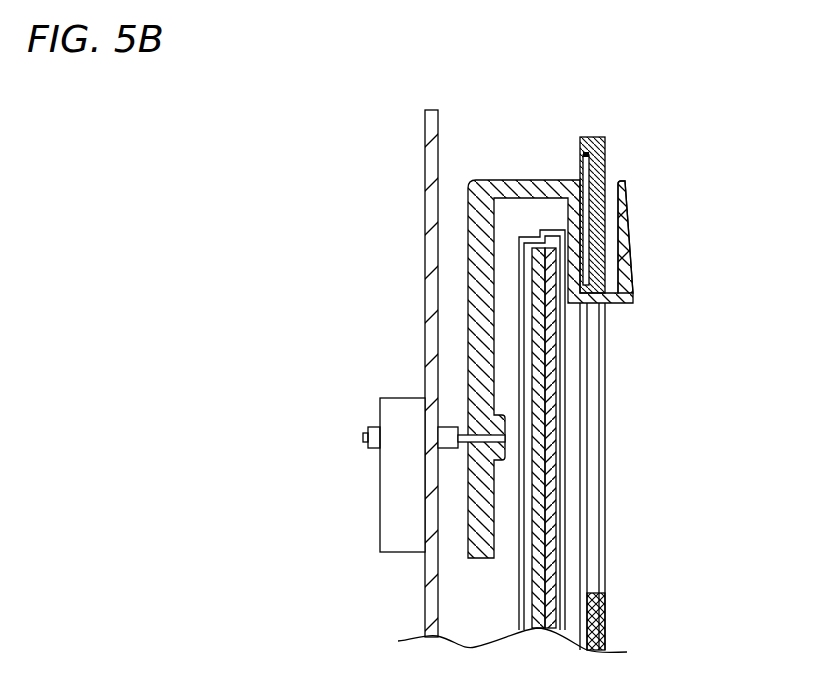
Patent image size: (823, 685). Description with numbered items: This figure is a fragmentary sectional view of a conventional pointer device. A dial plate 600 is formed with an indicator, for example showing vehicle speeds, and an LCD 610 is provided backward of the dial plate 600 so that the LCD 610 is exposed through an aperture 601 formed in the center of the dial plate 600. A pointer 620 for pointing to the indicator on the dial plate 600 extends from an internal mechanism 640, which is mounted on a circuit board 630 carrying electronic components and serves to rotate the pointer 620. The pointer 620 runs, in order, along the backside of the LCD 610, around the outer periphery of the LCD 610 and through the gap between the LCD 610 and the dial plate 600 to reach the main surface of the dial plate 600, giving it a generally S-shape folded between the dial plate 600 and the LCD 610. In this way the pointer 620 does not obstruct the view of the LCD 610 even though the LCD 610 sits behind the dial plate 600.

The dial plate 600 is at (605, 165).
The aperture 601 is at (614, 361).
The LCD 610 is at (552, 378).
The pointer 620 is at (522, 170).
The circuit board 630 is at (440, 160).
The internal mechanism 640 is at (403, 398).